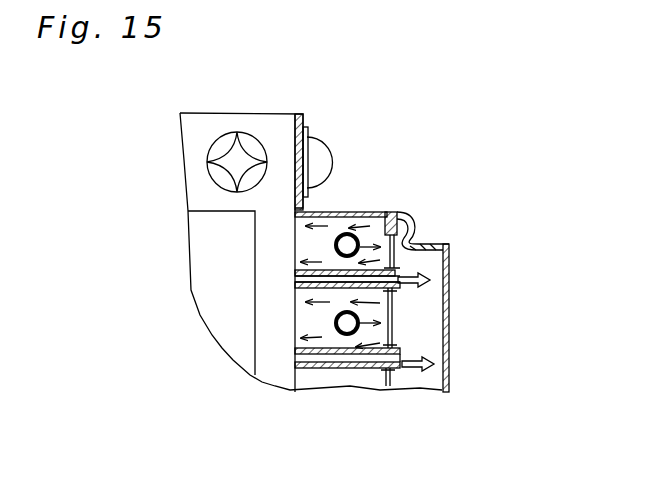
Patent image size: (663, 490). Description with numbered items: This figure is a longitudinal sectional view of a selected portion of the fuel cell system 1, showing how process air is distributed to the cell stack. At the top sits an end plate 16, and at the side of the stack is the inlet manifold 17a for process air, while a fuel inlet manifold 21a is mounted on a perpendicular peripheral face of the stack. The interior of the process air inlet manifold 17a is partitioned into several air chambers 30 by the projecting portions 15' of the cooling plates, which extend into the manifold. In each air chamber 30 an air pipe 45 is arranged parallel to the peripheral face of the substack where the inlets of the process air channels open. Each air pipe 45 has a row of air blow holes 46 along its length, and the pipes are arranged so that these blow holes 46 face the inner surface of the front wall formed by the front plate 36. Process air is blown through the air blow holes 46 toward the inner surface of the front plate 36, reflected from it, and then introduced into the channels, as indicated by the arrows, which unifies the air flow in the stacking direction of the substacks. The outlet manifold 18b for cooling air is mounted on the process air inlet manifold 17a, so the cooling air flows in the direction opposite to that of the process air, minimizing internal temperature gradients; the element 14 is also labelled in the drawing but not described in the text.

The assembly 1 is at (287, 213).
The hook flange 14 is at (437, 230).
The projecting portion of the cooling plate 15' is at (347, 405).
The end plate 16 is at (238, 115).
The inlet manifold for process air 17a is at (326, 212).
The outlet manifold for cooling air 18b is at (449, 295).
The inlet manifold for fuel 21a is at (215, 270).
The air chamber 30 is at (339, 286).
The front plate 36 is at (393, 325).
The air pipe 45 is at (343, 233).
The air blow hole 46 is at (383, 220).